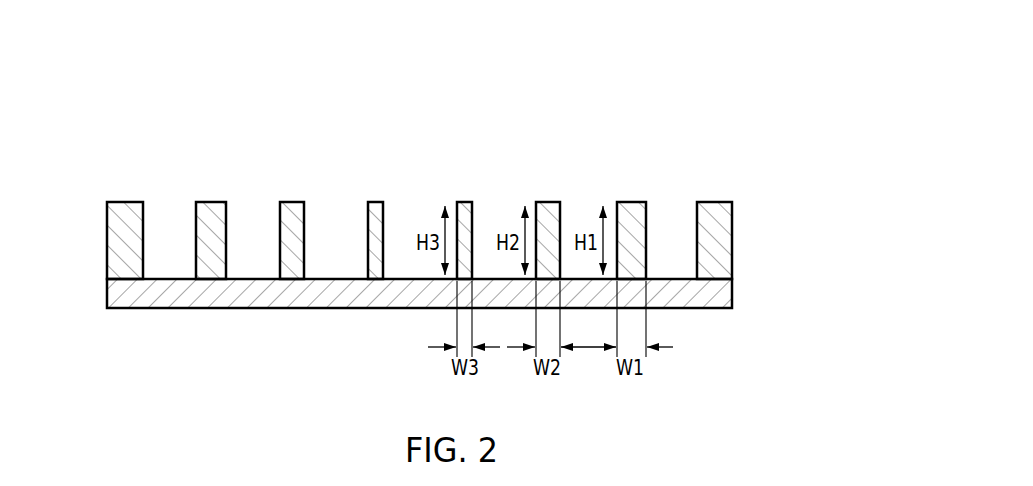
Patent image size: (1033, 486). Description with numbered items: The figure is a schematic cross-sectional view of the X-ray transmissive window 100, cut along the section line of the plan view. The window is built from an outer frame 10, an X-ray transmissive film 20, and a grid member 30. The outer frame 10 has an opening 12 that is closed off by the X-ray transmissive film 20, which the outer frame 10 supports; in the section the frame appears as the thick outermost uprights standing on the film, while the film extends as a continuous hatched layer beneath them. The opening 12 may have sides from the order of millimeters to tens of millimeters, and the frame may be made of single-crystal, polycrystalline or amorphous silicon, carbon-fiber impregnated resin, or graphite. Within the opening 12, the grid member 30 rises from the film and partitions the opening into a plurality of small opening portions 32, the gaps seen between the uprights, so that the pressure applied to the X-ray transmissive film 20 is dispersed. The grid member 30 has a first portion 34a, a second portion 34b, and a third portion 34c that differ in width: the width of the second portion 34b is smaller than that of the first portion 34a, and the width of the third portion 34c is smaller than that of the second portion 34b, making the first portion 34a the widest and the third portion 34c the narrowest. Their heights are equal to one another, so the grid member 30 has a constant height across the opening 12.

The X-ray transmissive window 100 is at (716, 58).
The outer frame 10 is at (446, 213).
The opening 12 is at (685, 188).
The X-ray transmissive film 20 is at (720, 296).
The grid member 30 is at (638, 98).
The small opening portions 32 is at (170, 204).
The first portion 34a is at (210, 203).
The second portion 34b is at (296, 203).
The third portion 34c is at (376, 203).